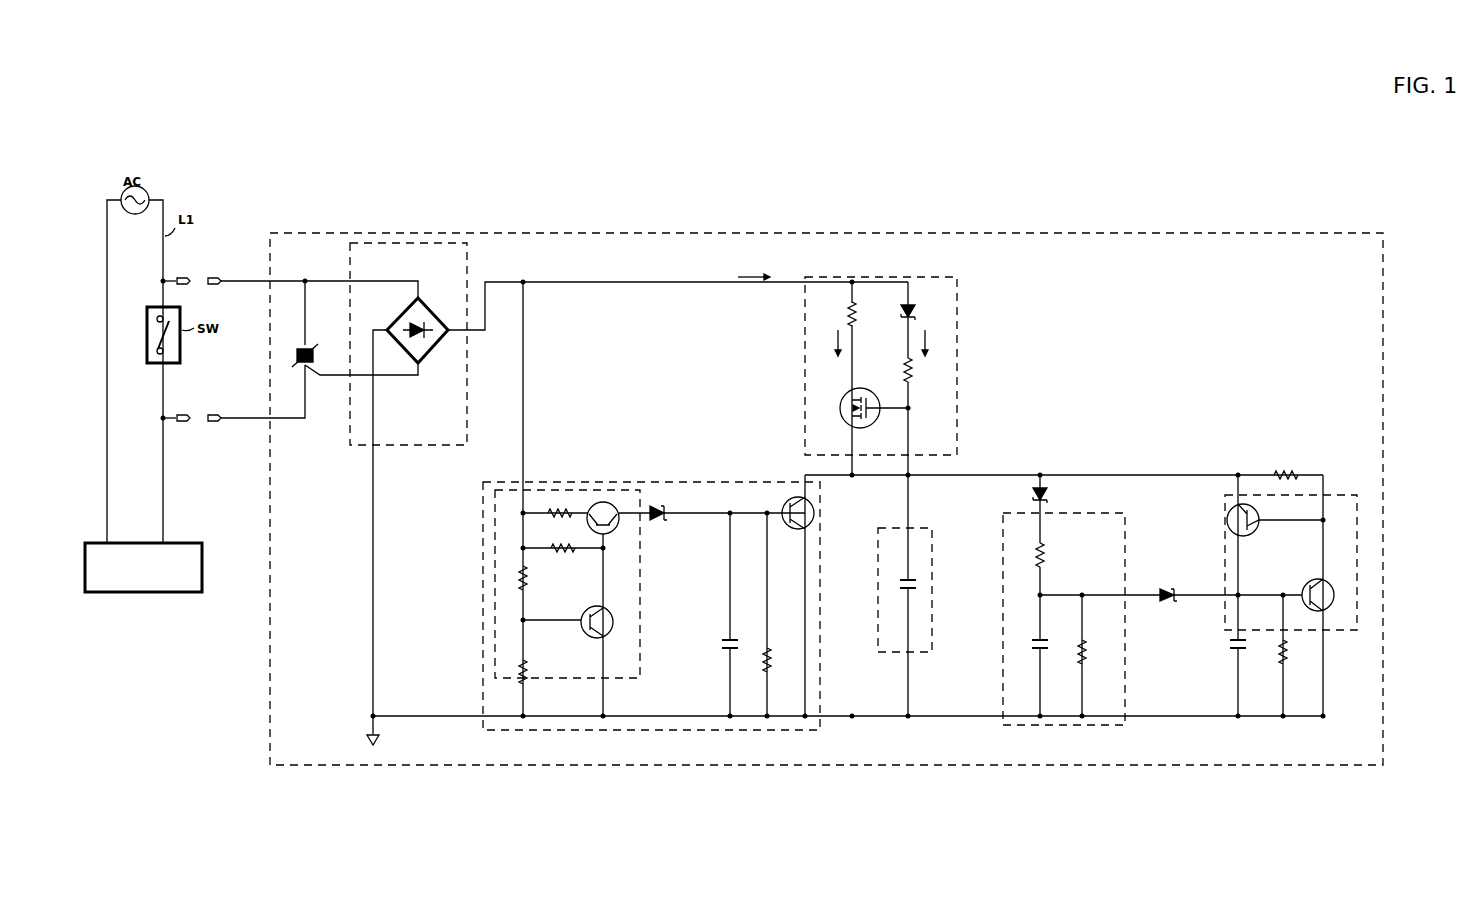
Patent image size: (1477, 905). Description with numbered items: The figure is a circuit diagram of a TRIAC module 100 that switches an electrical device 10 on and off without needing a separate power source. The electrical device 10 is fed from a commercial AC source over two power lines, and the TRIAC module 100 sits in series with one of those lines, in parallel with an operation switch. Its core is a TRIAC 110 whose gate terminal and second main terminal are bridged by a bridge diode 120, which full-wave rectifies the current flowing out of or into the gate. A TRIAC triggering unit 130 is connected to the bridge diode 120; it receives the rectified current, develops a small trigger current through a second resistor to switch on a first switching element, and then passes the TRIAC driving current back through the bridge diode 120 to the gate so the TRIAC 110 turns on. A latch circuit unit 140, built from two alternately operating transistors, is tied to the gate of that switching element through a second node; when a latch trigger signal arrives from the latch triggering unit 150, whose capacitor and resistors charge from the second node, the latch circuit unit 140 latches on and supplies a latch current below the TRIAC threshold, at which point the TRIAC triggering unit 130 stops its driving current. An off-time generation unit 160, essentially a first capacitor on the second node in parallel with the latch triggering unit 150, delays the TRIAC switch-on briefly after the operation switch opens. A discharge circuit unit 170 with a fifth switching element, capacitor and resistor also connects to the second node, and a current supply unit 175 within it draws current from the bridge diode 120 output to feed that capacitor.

The electrical device 10 is at (202, 565).
The TRIAC module 100 is at (1035, 233).
The TRIAC 110 is at (296, 344).
The bridge diode 120 is at (410, 243).
The TRIAC triggering unit 130 is at (858, 270).
The latch circuit unit 140 is at (1345, 490).
The latch triggering unit 150 is at (1081, 513).
The off-time generation unit 160 is at (899, 656).
The discharge circuit unit 170 is at (651, 580).
The current supply unit 175 is at (598, 487).